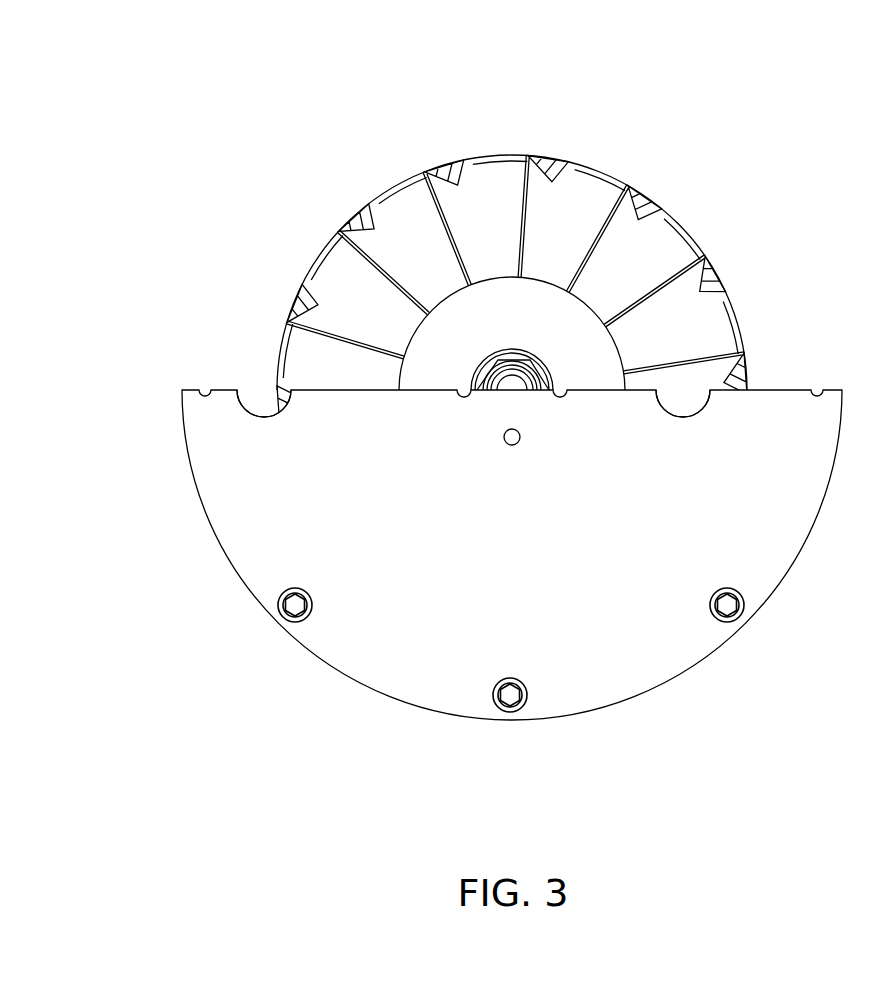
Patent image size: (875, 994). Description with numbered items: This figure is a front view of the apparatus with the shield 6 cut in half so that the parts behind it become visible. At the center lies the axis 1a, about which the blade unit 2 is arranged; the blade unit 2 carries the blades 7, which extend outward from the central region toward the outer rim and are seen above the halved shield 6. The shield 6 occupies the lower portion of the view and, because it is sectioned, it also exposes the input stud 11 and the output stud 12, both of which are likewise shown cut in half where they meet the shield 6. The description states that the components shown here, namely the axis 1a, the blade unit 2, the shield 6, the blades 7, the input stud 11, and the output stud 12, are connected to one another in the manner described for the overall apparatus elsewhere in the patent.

The axis 1a is at (508, 383).
The blade unit 2 is at (512, 246).
The shield 6 is at (740, 428).
The blades 7 is at (632, 258).
The input stud 11 is at (678, 420).
The output stud 12 is at (263, 415).